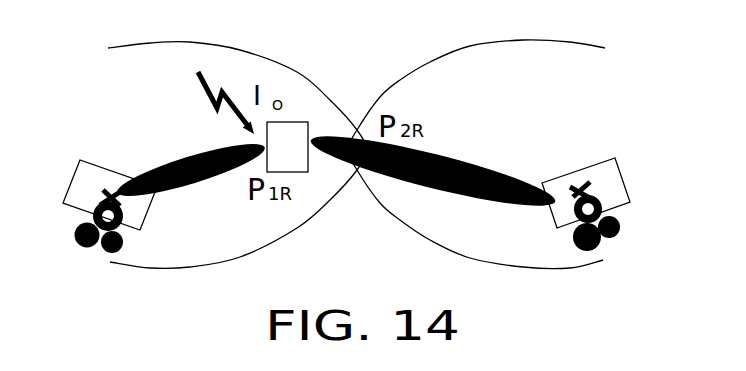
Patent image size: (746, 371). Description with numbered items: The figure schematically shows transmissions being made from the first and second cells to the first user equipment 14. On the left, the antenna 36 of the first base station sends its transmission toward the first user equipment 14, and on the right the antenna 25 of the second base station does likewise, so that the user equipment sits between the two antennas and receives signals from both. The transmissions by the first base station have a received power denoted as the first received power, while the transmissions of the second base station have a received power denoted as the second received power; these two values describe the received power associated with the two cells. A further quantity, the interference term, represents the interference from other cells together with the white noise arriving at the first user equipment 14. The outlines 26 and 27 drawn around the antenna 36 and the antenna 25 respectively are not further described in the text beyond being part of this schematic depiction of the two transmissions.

The first user equipment 14 is at (308, 172).
The antenna of the second base station 25 is at (627, 180).
The antenna of the first base station 36 is at (137, 178).
The first coverage region 26 is at (295, 70).
The second coverage region 27 is at (577, 42).